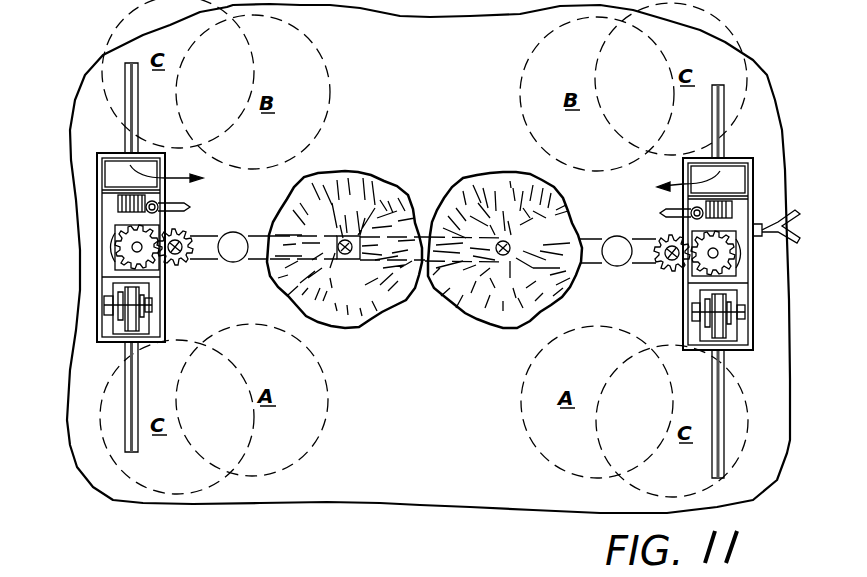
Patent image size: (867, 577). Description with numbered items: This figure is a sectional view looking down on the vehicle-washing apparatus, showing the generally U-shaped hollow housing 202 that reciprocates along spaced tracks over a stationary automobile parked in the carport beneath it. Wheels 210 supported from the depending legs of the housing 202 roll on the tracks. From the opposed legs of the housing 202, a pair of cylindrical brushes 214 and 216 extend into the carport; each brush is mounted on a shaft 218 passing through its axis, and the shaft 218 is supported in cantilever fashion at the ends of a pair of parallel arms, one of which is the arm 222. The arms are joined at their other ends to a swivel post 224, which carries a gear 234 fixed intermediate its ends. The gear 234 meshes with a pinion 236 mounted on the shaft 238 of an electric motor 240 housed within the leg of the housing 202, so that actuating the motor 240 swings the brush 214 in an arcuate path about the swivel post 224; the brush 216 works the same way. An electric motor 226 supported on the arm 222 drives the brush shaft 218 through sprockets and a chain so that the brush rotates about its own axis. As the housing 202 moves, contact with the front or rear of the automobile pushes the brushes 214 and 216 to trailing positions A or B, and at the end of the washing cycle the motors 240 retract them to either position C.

The housing 202 is at (98, 294).
The wheels 210 is at (125, 325).
The brush 214 is at (366, 185).
The brush 216 is at (481, 190).
The shaft 218 is at (348, 257).
The arm 222 is at (257, 238).
The swivel post 224 is at (178, 255).
The electric motor 226 is at (236, 258).
The gear 234 is at (188, 240).
The pinion 236 is at (128, 238).
The shaft 238 is at (134, 250).
The electric motor 240 is at (112, 249).